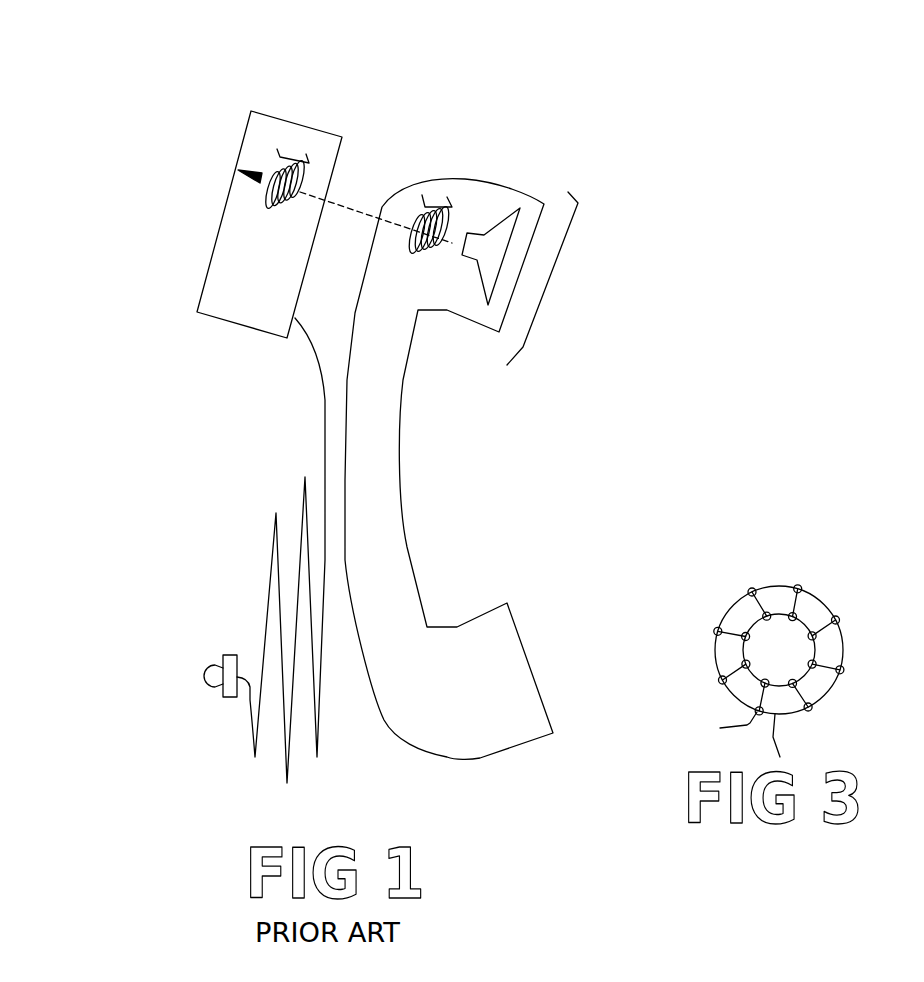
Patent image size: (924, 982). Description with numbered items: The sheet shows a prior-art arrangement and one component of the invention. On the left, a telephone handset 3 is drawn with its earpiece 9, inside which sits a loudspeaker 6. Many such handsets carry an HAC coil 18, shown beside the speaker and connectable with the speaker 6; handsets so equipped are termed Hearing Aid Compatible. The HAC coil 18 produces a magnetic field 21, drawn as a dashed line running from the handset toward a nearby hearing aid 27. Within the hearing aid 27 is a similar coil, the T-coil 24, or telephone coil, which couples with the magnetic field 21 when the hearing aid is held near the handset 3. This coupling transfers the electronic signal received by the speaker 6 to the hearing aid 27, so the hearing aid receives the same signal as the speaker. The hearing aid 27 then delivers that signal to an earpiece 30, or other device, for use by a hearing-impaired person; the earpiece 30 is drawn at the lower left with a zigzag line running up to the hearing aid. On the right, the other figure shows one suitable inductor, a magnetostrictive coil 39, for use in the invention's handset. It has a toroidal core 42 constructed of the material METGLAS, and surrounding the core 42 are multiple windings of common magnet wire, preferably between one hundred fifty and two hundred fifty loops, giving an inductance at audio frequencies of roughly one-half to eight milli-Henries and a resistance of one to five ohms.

In FIG. 1, the telephone handset 3 is at (400, 460).
In FIG. 1, the loudspeaker 6 is at (497, 227).
In FIG. 1, the earpiece 9 is at (552, 282).
In FIG. 1, the HAC coil 18 is at (438, 206).
In FIG. 1, the magnetic field 21 is at (352, 208).
In FIG. 1, the T-coil 24 is at (296, 156).
In FIG. 1, the hearing aid 27 is at (242, 327).
In FIG. 1, the earpiece 30 is at (223, 655).
In FIG. 3, the magnetostrictive coil 39 is at (737, 620).
In FIG. 3, the toroidal core 42 is at (717, 660).